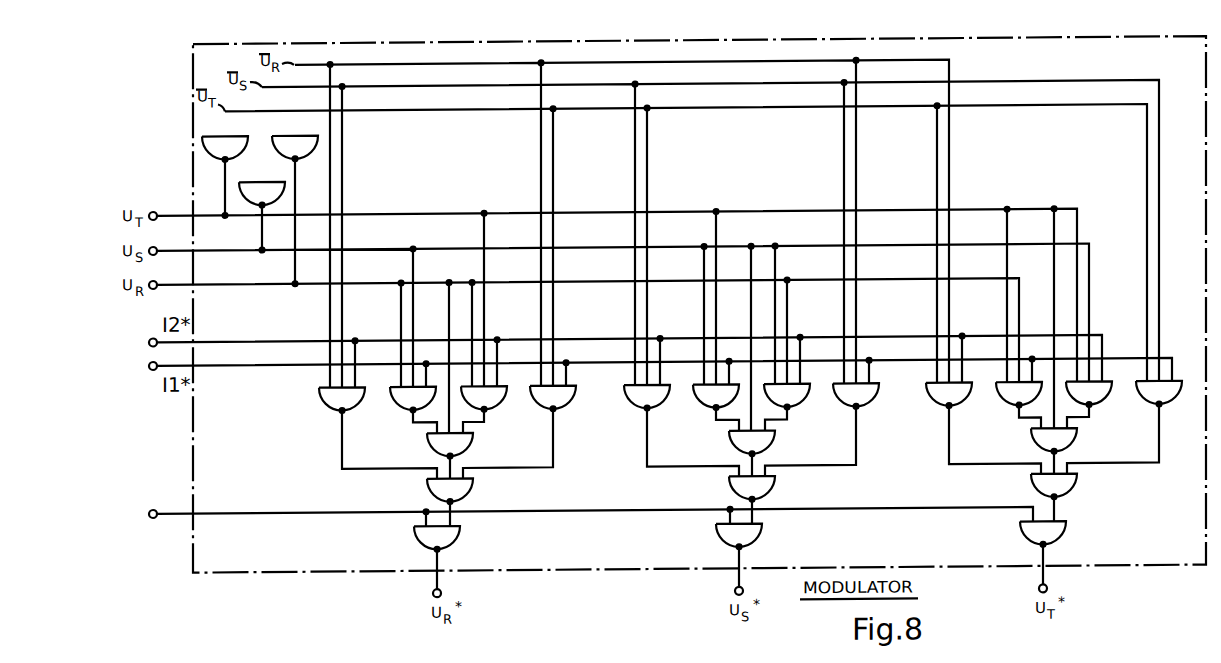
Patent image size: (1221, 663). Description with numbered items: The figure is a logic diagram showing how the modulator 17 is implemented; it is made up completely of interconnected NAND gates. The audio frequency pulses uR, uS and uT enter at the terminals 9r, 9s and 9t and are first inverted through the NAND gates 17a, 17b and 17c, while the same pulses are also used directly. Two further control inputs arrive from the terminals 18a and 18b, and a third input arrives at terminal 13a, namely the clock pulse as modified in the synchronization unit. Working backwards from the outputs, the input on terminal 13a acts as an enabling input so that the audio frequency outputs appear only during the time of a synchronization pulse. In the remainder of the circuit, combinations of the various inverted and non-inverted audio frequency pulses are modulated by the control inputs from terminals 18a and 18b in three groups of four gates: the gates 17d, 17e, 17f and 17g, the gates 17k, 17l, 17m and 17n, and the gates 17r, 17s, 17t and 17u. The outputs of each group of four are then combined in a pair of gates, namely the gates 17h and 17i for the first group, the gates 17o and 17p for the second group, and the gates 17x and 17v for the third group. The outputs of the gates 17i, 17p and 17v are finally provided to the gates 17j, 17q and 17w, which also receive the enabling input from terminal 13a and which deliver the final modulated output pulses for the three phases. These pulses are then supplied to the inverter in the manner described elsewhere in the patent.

The modulator 17 is at (268, 575).
The NAND gate 17a is at (232, 152).
The NAND gate 17b is at (256, 204).
The NAND gate 17c is at (302, 152).
The NAND gate 17d is at (338, 394).
The NAND gate 17e is at (409, 394).
The NAND gate 17f is at (504, 394).
The NAND gate 17g is at (574, 394).
The NAND gate 17h is at (456, 457).
The NAND gate 17i is at (456, 501).
The NAND gate 17j is at (443, 548).
The NAND gate 17k is at (670, 396).
The NAND gate 17l is at (713, 396).
The NAND gate 17m is at (807, 394).
The NAND gate 17n is at (877, 394).
The NAND gate 17o is at (758, 457).
The NAND gate 17p is at (758, 501).
The NAND gate 17q is at (745, 548).
The NAND gate 17r is at (945, 394).
The NAND gate 17s is at (1015, 394).
The NAND gate 17t is at (1109, 394).
The NAND gate 17u is at (1180, 394).
The NAND gate 17v is at (1060, 501).
The NAND gate 17w is at (1049, 548).
The NAND gate 17x is at (1060, 457).
The terminal 9r is at (154, 211).
The terminal 9s is at (154, 247).
The terminal 9t is at (154, 289).
The terminal 18a is at (644, 368).
The terminal 18b is at (609, 357).
The terminal 13a is at (576, 513).